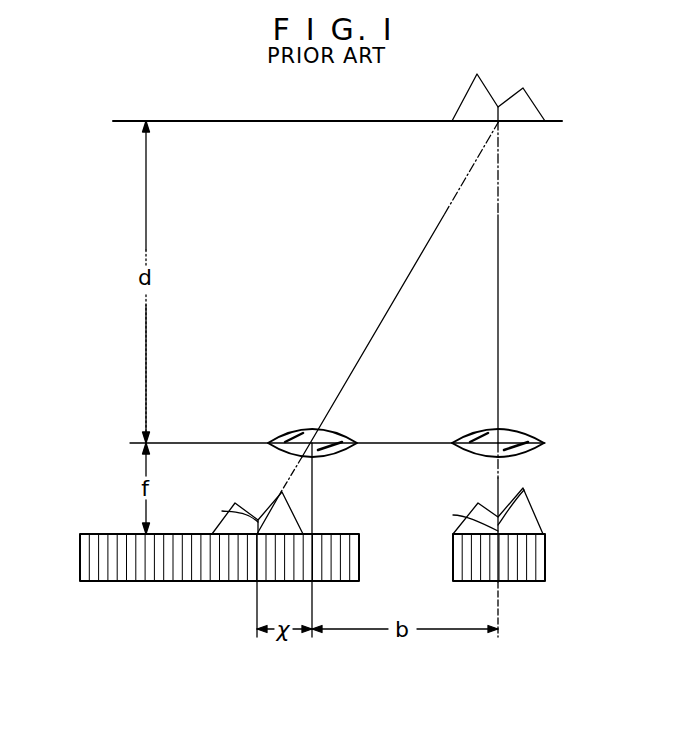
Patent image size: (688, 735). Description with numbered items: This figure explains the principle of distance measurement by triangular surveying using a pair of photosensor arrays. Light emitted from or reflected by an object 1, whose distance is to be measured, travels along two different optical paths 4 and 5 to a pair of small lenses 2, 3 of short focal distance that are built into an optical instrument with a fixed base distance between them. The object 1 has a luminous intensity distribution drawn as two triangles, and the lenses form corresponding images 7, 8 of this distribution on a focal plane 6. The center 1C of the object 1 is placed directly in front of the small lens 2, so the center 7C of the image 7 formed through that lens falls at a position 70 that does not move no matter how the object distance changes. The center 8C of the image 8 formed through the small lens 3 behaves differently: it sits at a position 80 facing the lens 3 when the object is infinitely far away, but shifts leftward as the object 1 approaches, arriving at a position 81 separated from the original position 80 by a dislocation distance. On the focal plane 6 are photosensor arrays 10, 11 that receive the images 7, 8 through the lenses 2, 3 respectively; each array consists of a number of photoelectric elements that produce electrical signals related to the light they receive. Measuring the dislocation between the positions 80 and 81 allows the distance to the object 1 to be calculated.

The object 1 is at (533, 104).
The center of the object 1C is at (502, 119).
The small lens 2 is at (473, 432).
The small lens 3 is at (283, 432).
The optical path 4 is at (500, 267).
The optical path 5 is at (407, 279).
The focal plane 6 is at (313, 533).
The image 7 is at (537, 518).
The center of the image 7C is at (524, 490).
The image 8 is at (293, 508).
The center of the image 8C is at (222, 511).
The photosensor array 10 is at (545, 553).
The photosensor array 11 is at (80, 553).
The image center position 70 is at (498, 582).
The original position 80 is at (312, 582).
The dislocated position 81 is at (257, 582).